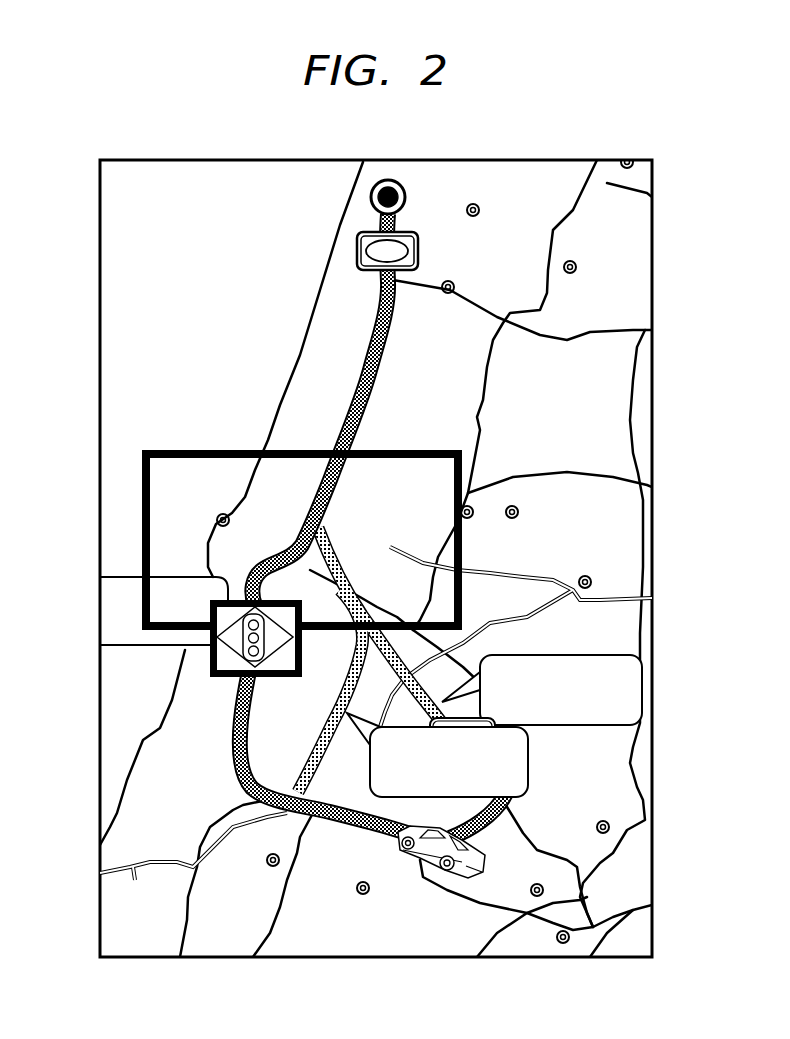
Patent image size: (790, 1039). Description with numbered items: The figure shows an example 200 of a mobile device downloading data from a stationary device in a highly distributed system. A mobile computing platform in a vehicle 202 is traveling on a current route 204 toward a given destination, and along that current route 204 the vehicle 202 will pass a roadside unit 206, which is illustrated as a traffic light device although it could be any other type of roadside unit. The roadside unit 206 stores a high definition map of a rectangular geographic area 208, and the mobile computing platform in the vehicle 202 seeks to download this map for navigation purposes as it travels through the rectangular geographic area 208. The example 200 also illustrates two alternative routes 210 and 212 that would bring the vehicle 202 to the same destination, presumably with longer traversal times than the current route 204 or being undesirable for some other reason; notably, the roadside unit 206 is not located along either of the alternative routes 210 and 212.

The example 200 is at (393, 140).
The vehicle 202 is at (433, 845).
The current route 204 is at (232, 726).
The roadside unit 206 is at (210, 648).
The rectangular geographic area 208 is at (142, 556).
The alternative route 210 is at (480, 718).
The alternative route 212 is at (470, 820).